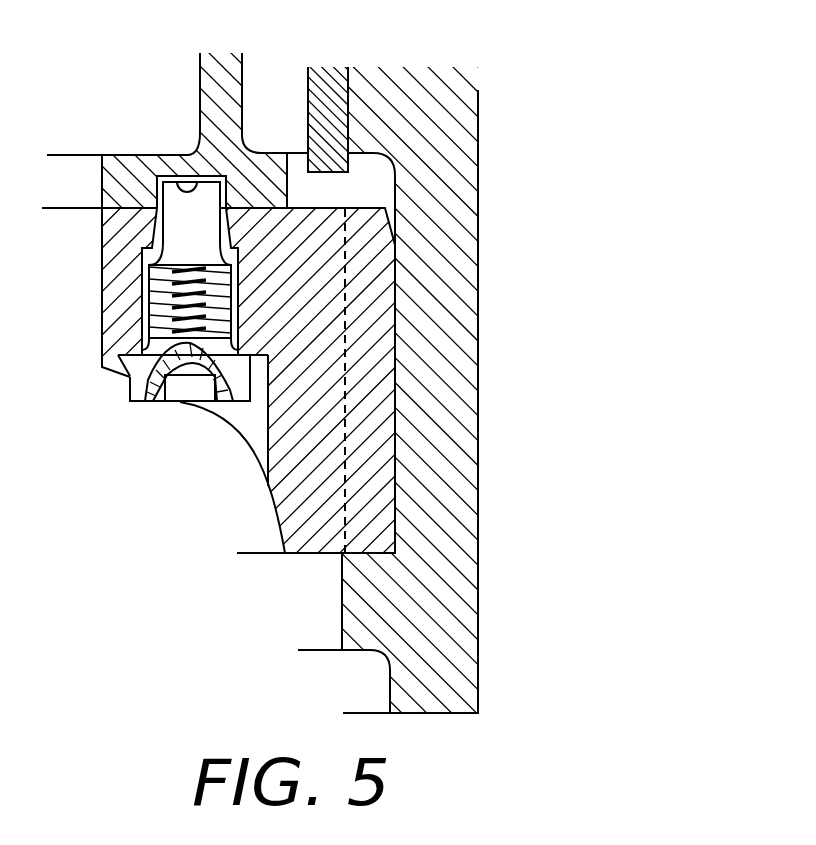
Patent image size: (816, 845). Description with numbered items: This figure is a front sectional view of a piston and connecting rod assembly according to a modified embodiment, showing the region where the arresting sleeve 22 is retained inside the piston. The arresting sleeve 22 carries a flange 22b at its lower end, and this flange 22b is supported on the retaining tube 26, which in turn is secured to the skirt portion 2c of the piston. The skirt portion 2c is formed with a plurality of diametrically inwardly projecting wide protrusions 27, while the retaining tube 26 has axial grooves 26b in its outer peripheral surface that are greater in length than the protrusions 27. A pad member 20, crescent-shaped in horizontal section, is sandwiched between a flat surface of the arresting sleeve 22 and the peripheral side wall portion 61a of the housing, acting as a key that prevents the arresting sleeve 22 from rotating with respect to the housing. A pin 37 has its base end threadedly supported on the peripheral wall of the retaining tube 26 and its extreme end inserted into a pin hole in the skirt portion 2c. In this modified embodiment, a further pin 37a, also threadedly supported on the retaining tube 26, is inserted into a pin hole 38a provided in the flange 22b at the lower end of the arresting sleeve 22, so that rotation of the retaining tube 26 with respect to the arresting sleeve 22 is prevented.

The skirt portion 2c is at (458, 327).
The pad member 20 is at (272, 77).
The arresting sleeve 22 is at (215, 80).
The flange 22b is at (125, 160).
The retaining tube 26 is at (305, 321).
The axial grooves 26b is at (345, 438).
The protrusions 27 is at (360, 592).
The pin 37 is at (178, 242).
The pin 37a is at (142, 391).
The pin hole 38a is at (178, 186).
The side wall portion 61a is at (328, 77).